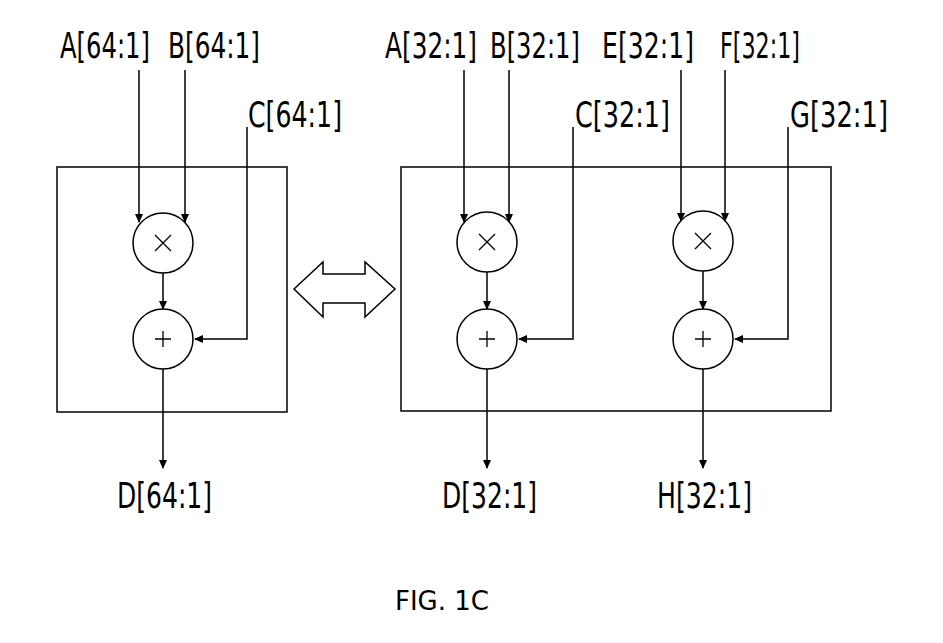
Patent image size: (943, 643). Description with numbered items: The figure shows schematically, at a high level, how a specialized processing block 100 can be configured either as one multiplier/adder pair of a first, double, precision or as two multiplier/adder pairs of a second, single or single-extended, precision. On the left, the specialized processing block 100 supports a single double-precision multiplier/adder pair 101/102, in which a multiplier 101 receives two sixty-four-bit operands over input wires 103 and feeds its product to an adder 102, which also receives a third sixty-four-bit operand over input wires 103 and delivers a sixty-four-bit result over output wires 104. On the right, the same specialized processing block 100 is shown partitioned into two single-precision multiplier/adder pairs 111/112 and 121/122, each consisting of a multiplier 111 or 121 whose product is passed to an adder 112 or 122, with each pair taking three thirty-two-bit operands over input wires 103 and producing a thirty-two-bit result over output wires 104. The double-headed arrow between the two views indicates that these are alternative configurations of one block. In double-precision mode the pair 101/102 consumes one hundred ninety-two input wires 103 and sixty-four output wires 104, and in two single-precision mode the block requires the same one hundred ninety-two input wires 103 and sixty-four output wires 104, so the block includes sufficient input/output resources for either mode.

The specialized processing block 100 is at (128, 167).
The multiplier 101 is at (131, 243).
The adder 102 is at (131, 339).
The input wires 103 is at (139, 130).
The output wires 104 is at (167, 430).
The multiplier 111 is at (506, 264).
The adder 112 is at (506, 362).
The multiplier 121 is at (722, 263).
The adder 122 is at (722, 362).